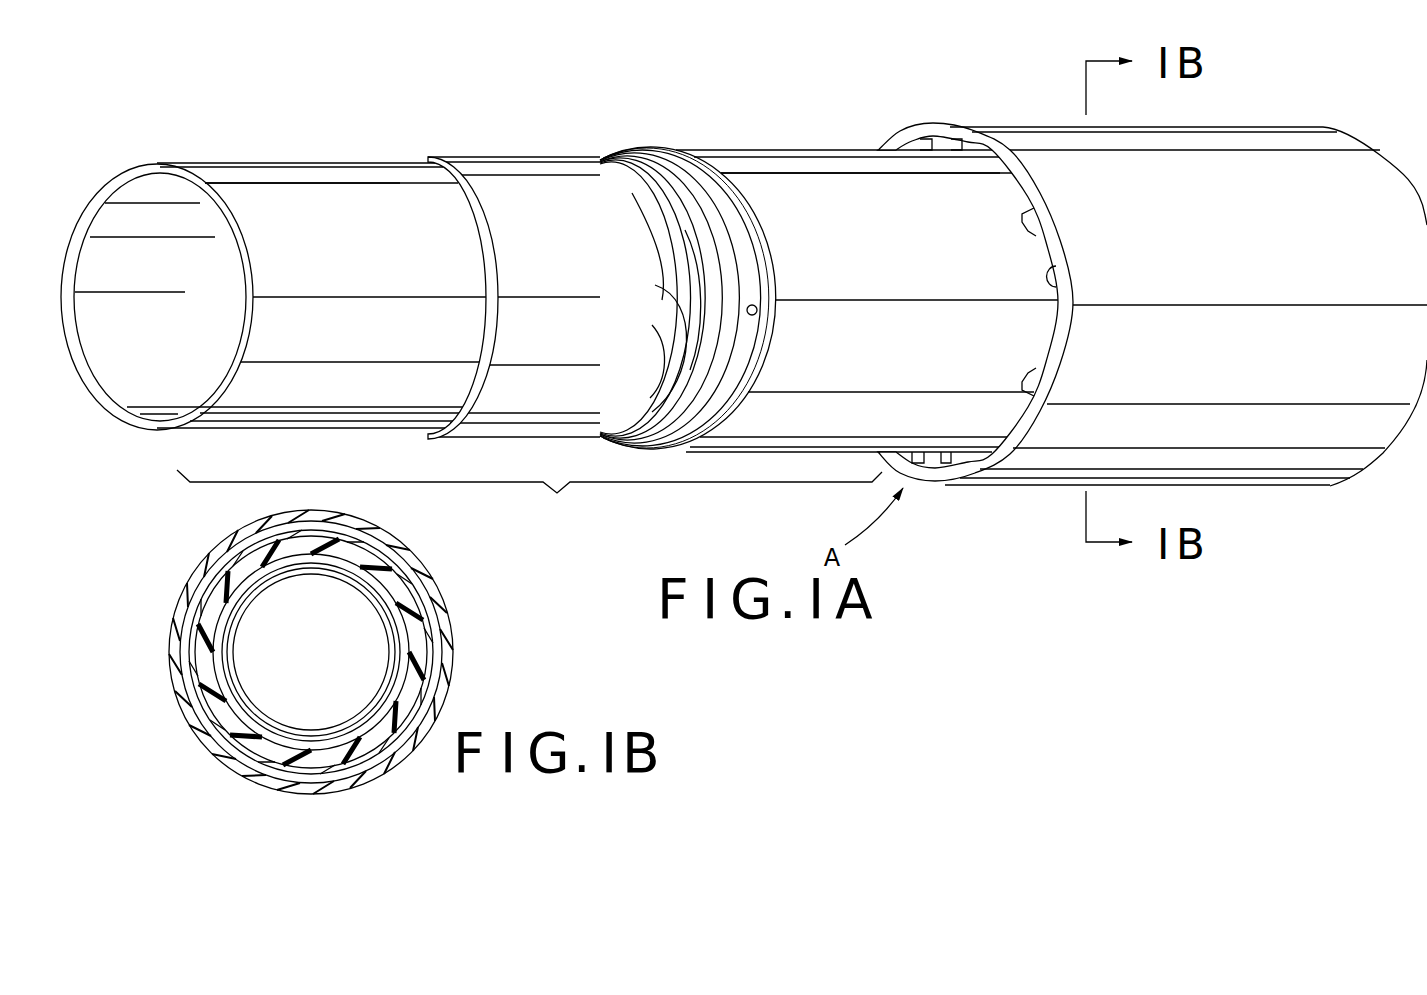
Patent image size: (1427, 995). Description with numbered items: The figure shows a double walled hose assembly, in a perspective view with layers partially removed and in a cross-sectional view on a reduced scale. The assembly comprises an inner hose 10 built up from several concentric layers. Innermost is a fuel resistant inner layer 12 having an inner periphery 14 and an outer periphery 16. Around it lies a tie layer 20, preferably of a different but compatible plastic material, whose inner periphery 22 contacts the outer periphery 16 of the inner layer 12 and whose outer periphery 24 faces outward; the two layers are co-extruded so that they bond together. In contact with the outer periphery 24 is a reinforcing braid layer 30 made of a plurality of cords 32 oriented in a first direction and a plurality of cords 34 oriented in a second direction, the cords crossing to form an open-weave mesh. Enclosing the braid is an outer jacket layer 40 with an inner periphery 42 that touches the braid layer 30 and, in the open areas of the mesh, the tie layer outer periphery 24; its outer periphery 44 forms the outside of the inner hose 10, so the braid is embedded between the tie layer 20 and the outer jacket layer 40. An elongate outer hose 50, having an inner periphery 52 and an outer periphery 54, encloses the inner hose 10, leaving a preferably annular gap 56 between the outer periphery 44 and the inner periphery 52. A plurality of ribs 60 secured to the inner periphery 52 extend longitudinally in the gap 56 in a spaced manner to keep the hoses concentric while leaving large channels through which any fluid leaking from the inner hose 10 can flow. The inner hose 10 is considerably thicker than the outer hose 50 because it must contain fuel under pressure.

In FIG. 1A, the inner hose 10 is at (529, 499).
In FIG. 1B, the inner hose 10 is at (447, 672).
In FIG. 1A, the fuel resistant inner layer 12 is at (221, 170).
In FIG. 1B, the fuel resistant inner layer 12 is at (333, 577).
In FIG. 1A, the inner periphery 14 is at (158, 178).
In FIG. 1B, the inner periphery 14 is at (236, 634).
In FIG. 1A, the outer periphery 16 is at (305, 182).
In FIG. 1A, the tie layer 20 is at (457, 156).
In FIG. 1B, the tie layer 20 is at (403, 634).
In FIG. 1A, the inner periphery 22 is at (462, 210).
In FIG. 1A, the outer periphery 24 is at (548, 183).
In FIG. 1A, the reinforcing braid layer 30 is at (614, 155).
In FIG. 1A, the cords 32 is at (655, 318).
In FIG. 1A, the cords 34 is at (660, 263).
In FIG. 1A, the outer jacket layer 40 is at (742, 146).
In FIG. 1B, the outer jacket layer 40 is at (296, 754).
In FIG. 1A, the inner periphery 42 is at (757, 312).
In FIG. 1A, the outer periphery 44 is at (822, 171).
In FIG. 1B, the outer periphery 44 is at (348, 776).
In FIG. 1A, the outer hose 50 is at (1300, 495).
In FIG. 1B, the outer hose 50 is at (407, 529).
In FIG. 1A, the inner periphery 52 is at (1050, 273).
In FIG. 1A, the outer periphery 54 is at (1294, 150).
In FIG. 1A, the gap 56 is at (960, 139).
In FIG. 1B, the gap 56 is at (185, 606).
In FIG. 1A, the rib 60 is at (1026, 223).
In FIG. 1B, the rib 60 is at (193, 712).